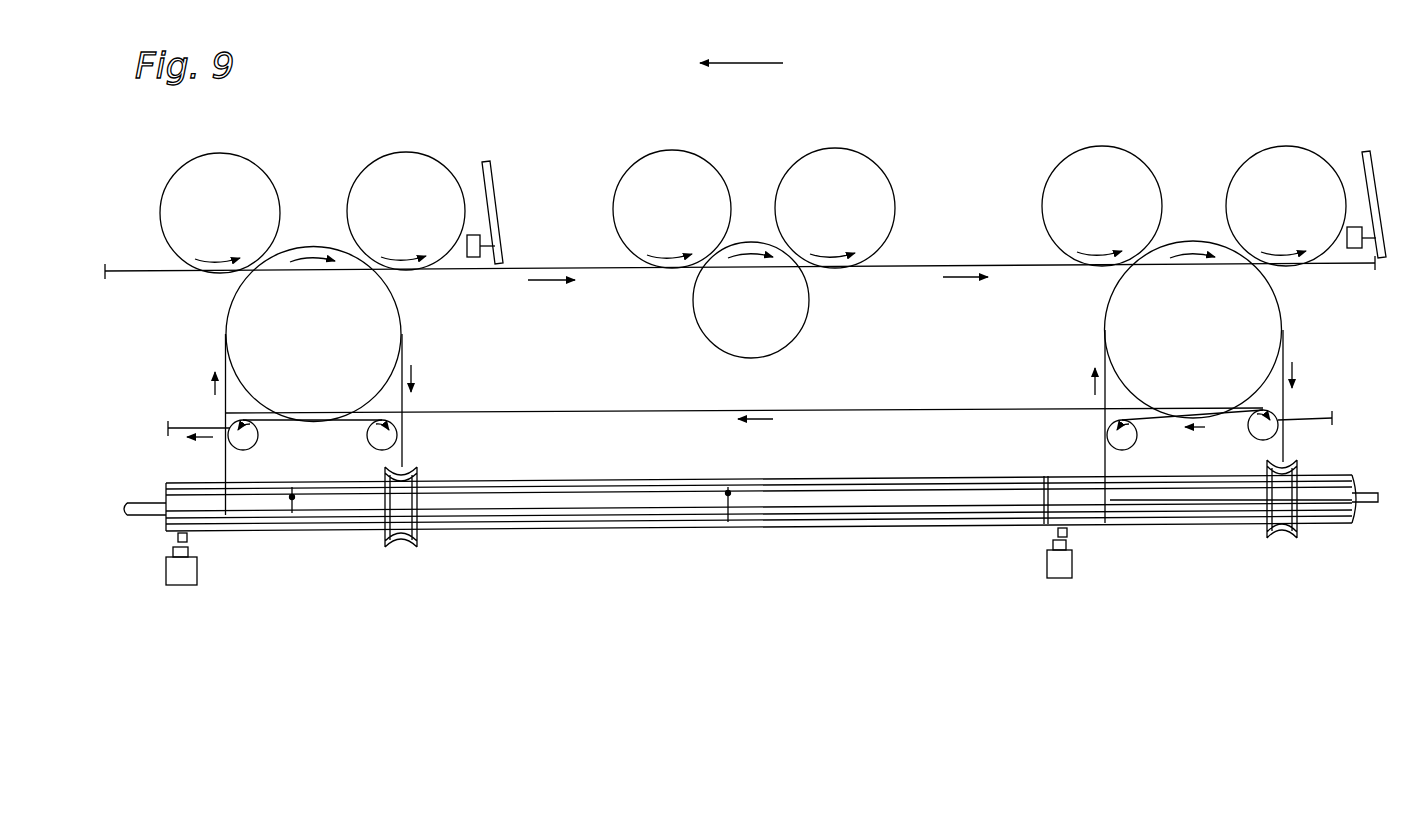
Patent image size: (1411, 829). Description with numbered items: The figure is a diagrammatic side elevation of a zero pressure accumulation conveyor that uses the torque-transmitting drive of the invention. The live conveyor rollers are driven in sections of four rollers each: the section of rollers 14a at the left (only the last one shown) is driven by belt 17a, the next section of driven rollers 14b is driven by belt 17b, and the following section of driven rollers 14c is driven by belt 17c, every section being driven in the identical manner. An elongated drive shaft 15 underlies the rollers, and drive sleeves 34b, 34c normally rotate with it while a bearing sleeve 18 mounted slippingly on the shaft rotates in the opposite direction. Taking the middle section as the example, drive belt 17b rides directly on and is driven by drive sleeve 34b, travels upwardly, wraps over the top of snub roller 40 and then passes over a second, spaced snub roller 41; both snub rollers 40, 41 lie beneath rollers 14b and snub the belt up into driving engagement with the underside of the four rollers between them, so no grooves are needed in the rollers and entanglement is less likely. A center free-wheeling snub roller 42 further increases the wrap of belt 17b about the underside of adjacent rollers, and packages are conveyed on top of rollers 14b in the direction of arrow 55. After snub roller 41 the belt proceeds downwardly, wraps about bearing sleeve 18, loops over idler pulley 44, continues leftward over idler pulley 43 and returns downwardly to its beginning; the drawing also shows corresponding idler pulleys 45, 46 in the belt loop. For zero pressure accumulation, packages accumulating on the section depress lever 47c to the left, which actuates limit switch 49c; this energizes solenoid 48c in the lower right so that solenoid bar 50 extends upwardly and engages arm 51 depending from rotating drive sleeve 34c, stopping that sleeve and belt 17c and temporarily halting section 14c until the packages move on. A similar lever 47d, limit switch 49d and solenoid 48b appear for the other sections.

The conveyor rollers 14a is at (235, 153).
The driven rollers 14b is at (395, 153).
The driven rollers 14c is at (1246, 150).
The drive shaft 15 is at (1362, 493).
The belt 17a is at (121, 271).
The drive belt 17b is at (607, 270).
The drive belt 17c is at (1372, 266).
The bearing sleeve 18 is at (402, 550).
The drive sleeve 34b is at (797, 503).
The drive sleeve 34c is at (1323, 500).
The snub roller 40 is at (313, 334).
The snub roller 41 is at (1193, 329).
The center free-wheeling snub roller 42 is at (751, 300).
The idler pulley 43 is at (240, 452).
The idler pulley 44 is at (1255, 438).
The idler roller 45 is at (374, 448).
The idler roller 46 is at (1125, 450).
The lever 47c is at (492, 172).
The sensor plate 47d is at (1365, 152).
The actuator 48b is at (182, 585).
The solenoid 48c is at (1052, 578).
The limit switch 49c is at (473, 257).
The sensor 49d is at (1353, 248).
The solenoid bar 50 is at (166, 565).
The arm 51 is at (178, 538).
The arrow 55 is at (748, 62).